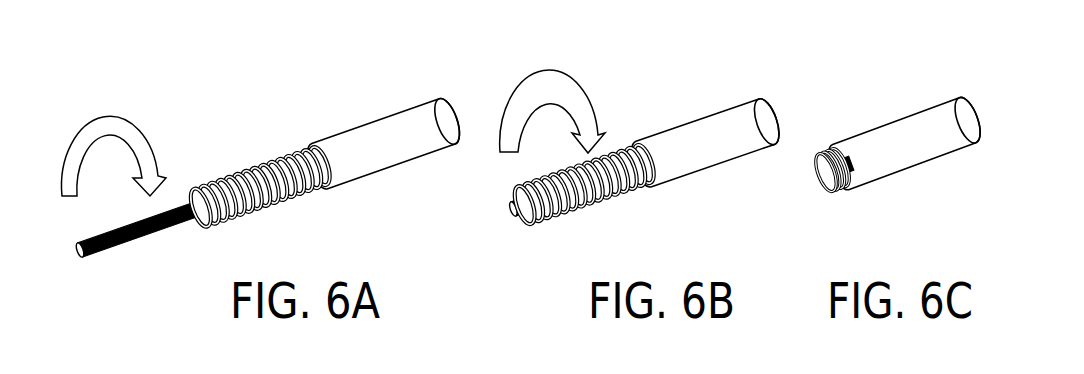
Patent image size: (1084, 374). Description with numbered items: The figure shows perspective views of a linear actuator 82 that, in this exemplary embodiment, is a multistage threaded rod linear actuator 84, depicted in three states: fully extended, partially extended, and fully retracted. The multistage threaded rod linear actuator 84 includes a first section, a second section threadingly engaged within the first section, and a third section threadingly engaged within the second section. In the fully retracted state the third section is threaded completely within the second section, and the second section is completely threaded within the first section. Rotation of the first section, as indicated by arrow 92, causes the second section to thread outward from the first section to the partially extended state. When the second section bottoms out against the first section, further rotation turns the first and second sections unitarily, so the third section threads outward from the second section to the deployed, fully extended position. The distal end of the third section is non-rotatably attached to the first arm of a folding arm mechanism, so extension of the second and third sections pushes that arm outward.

In FIG. 6A, the linear actuator 82 is at (266, 177).
In FIG. 6B, the linear actuator 82 is at (622, 145).
In FIG. 6C, the linear actuator 82 is at (876, 130).
In FIG. 6A, the multistage threaded rod linear actuator 84 is at (266, 177).
In FIG. 6B, the multistage threaded rod linear actuator 84 is at (622, 145).
In FIG. 6C, the multistage threaded rod linear actuator 84 is at (876, 130).
In FIG. 6A, the arrow 92 is at (110, 128).
In FIG. 6B, the arrow 92 is at (550, 85).